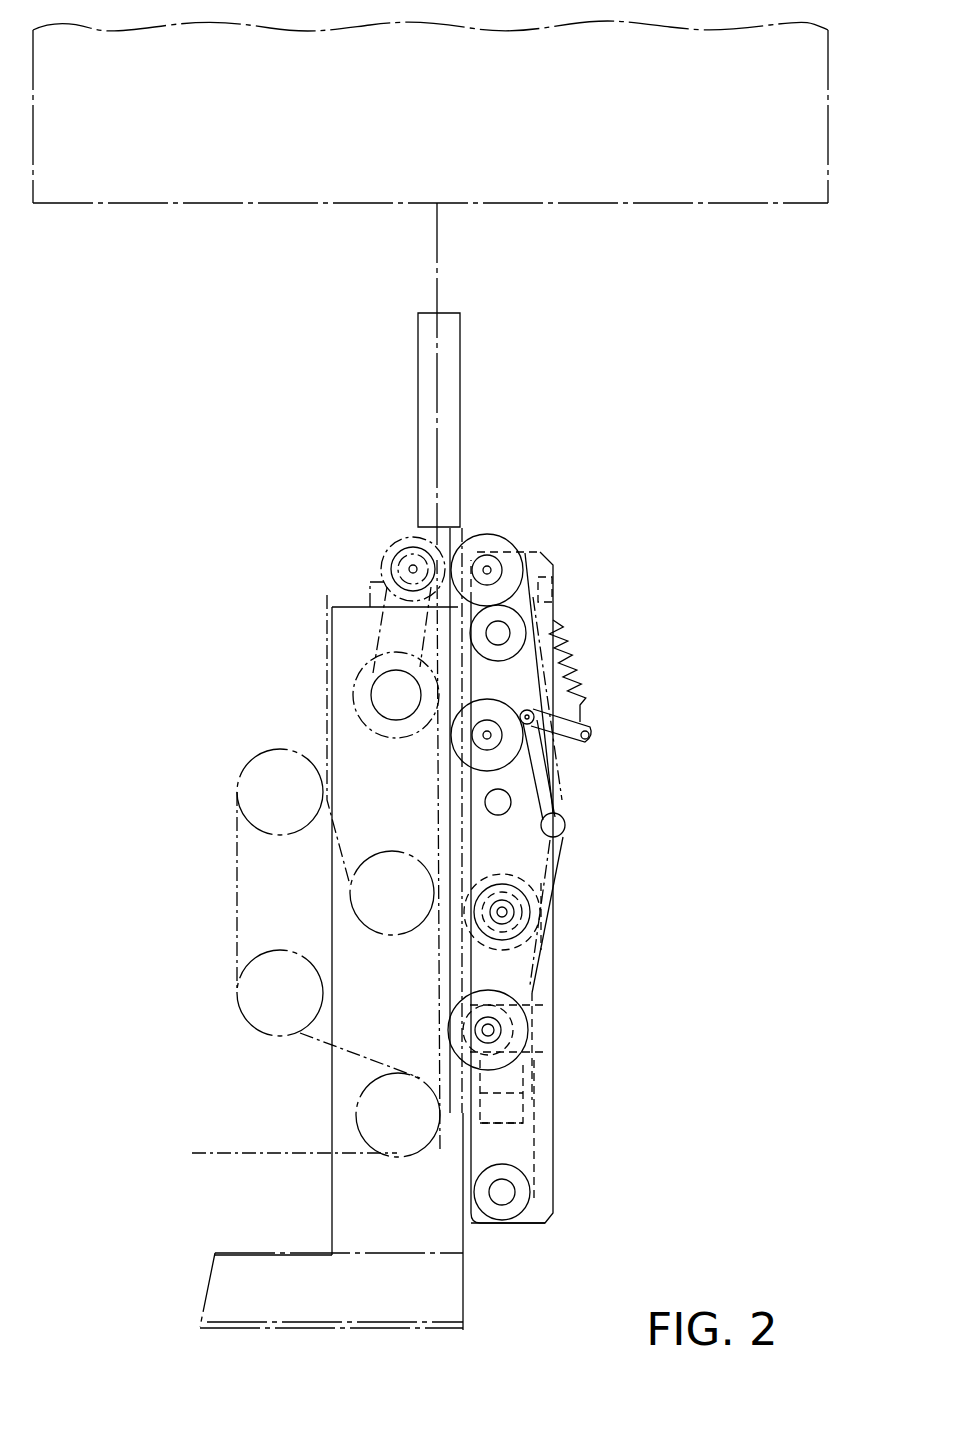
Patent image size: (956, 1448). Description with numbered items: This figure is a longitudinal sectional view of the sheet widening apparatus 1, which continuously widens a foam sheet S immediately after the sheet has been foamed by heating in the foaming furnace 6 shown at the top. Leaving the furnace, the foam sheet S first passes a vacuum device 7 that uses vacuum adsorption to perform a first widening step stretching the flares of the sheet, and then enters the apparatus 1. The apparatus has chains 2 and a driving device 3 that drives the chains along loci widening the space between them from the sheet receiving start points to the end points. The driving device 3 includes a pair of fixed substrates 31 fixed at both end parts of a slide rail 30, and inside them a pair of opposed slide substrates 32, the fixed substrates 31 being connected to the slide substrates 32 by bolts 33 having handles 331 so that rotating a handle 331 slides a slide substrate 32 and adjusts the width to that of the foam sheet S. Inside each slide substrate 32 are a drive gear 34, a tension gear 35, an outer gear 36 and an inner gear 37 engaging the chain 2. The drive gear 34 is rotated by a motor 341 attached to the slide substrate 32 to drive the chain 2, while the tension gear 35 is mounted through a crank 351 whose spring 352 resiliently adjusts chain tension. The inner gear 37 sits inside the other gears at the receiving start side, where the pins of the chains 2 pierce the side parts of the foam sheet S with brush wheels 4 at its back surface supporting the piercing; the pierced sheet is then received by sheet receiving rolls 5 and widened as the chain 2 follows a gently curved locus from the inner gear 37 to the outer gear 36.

The sheet widening apparatus 1 is at (196, 283).
The chain 2 is at (437, 940).
The driving device 3 is at (555, 1087).
The brush wheel 4 is at (398, 543).
The sheet receiving roll 5 is at (262, 760).
The foaming furnace 6 is at (76, 205).
The vacuum device 7 is at (460, 383).
The slide rail 30 is at (498, 633).
The fixed substrate 31 is at (540, 1128).
The slide substrate 32 is at (555, 1185).
The bolt 33 is at (505, 913).
The drive gear 34 is at (505, 995).
The tension gear 35 is at (565, 825).
The outer gear 36 is at (513, 747).
The inner gear 37 is at (493, 537).
The handle 331 is at (540, 893).
The motor 341 is at (545, 1048).
The crank 351 is at (555, 798).
The spring 352 is at (572, 658).
The foam sheet S is at (437, 297).